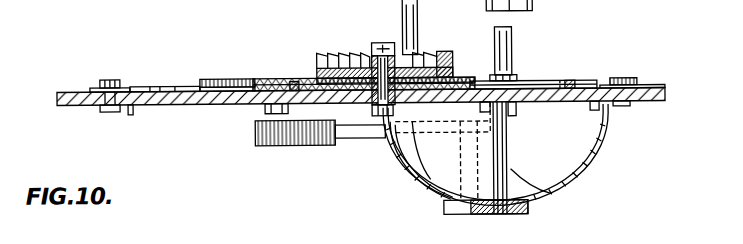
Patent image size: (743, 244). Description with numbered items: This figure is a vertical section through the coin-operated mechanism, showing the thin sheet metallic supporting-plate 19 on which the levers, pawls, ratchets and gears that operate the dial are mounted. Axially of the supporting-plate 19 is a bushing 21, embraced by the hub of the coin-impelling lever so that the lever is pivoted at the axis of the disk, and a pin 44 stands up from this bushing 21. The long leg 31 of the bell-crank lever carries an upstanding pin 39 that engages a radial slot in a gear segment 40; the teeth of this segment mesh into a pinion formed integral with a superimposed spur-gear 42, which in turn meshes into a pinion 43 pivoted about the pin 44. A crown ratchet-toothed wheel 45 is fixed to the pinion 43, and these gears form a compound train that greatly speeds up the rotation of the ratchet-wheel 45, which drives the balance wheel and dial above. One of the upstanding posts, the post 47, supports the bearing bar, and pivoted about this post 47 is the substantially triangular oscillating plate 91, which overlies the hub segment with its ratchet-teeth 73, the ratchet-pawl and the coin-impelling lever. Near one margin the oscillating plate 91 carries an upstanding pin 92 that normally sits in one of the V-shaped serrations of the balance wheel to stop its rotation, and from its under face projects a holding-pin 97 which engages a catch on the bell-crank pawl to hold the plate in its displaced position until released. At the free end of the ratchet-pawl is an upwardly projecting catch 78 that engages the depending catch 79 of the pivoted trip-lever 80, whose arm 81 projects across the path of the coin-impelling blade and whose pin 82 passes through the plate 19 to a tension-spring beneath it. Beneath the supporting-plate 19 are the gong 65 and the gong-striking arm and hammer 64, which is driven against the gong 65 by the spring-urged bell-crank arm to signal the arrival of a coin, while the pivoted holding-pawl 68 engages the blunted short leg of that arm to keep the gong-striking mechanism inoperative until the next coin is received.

The supporting-plate 19 is at (175, 100).
The bushing 21 is at (378, 92).
The long leg 31 is at (262, 94).
The upstanding pin 39 is at (295, 72).
The gear segment 40 is at (242, 71).
The spur-gear 42 is at (311, 73).
The pinion 43 is at (414, 80).
The pin 44 is at (386, 38).
The ratchet-wheel 45 is at (454, 51).
The post 47 is at (513, 45).
The gong-striking arm and hammer 64 is at (342, 146).
The gong 65 is at (598, 176).
The holding-pawl 68 is at (140, 80).
The ratchet-teeth 73 is at (483, 92).
The catch 78 is at (500, 98).
The catch 79 is at (513, 92).
The trip-lever 80 is at (611, 79).
The arm 81 is at (570, 91).
The pin 82 is at (599, 109).
The oscillating plate 91 is at (580, 78).
The pin 92 is at (426, 21).
The holding-pin 97 is at (560, 78).